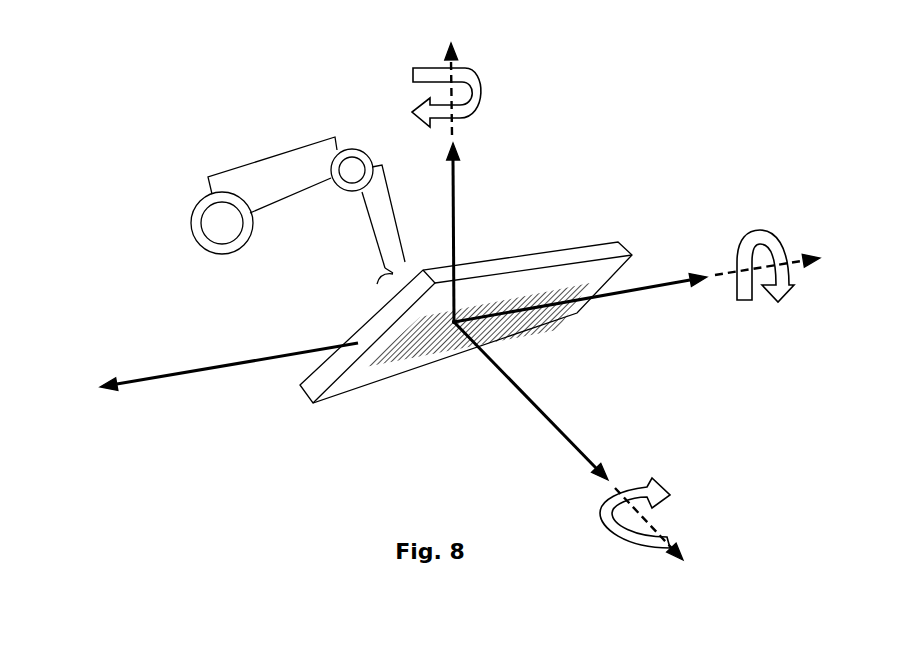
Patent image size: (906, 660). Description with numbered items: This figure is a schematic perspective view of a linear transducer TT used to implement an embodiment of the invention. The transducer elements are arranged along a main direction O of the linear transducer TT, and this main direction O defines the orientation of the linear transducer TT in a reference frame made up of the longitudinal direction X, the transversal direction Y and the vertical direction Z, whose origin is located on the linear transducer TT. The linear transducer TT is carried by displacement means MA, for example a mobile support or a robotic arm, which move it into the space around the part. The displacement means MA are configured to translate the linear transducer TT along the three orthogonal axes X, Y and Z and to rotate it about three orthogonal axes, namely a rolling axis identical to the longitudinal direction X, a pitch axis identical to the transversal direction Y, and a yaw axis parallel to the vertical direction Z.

The displacement means MA is at (215, 213).
The linear transducer TT is at (610, 215).
The main direction O is at (213, 365).
The longitudinal direction X is at (460, 322).
The transversal direction Y is at (568, 441).
The vertical direction Z is at (439, 182).